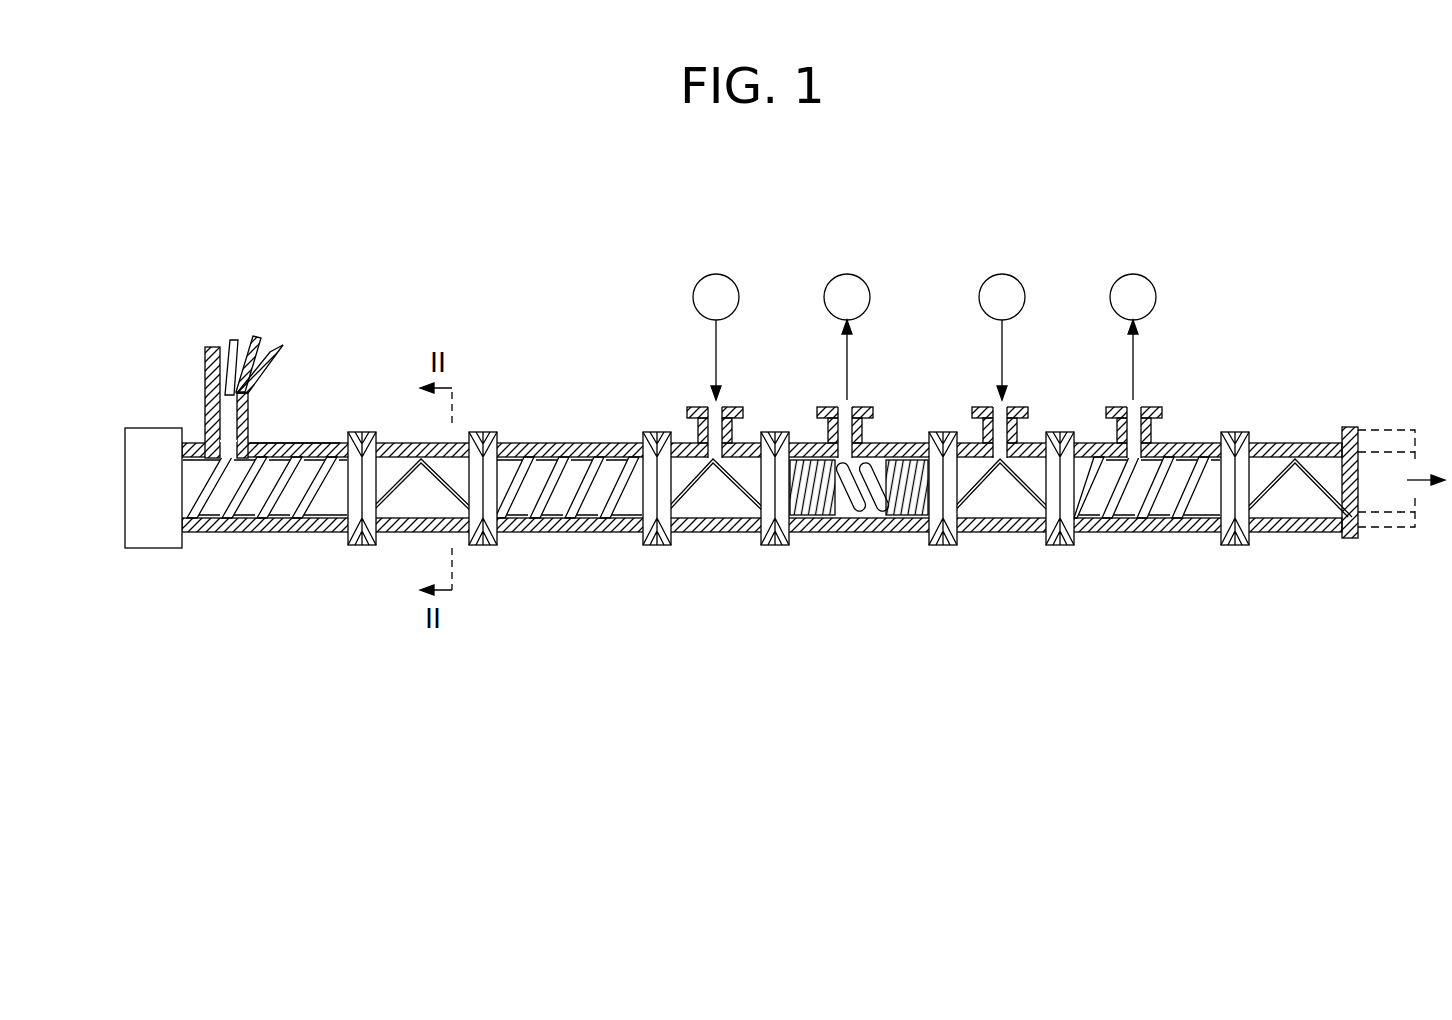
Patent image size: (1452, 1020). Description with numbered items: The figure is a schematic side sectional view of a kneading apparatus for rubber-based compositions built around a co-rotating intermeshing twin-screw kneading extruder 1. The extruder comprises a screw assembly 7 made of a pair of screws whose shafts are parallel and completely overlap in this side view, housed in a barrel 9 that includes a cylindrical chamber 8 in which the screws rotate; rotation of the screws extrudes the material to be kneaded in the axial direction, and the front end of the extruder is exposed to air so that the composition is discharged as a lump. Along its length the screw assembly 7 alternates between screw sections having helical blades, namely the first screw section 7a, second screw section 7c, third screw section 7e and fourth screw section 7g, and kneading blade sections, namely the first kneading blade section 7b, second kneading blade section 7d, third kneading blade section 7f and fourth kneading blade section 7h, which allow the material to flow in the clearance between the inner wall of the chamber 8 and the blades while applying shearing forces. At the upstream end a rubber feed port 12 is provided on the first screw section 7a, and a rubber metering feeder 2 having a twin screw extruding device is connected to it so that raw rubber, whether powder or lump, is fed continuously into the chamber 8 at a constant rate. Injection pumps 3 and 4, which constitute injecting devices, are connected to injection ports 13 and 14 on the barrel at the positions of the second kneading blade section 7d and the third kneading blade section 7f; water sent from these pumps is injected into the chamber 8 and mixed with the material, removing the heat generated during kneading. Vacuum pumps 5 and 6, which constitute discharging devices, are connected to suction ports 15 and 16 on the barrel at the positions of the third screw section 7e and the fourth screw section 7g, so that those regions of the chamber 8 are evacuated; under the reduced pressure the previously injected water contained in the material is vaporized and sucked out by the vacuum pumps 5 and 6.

The co-rotating intermeshing twin-screw kneading extruder 1 is at (150, 560).
The rubber metering feeder 2 is at (258, 318).
The injection pump 3 is at (732, 268).
The injection pump 4 is at (1021, 264).
The vacuum pump 5 is at (870, 266).
The vacuum pump 6 is at (1159, 264).
The screw assembly 7 is at (767, 545).
The first screw section 7a is at (280, 510).
The first kneading blade section 7b is at (400, 508).
The second screw section 7c is at (583, 505).
The second kneading blade section 7d is at (713, 505).
The third screw section 7e is at (860, 507).
The third kneading blade section 7f is at (1000, 503).
The fourth screw section 7g is at (1120, 505).
The fourth kneading blade section 7h is at (1300, 500).
The cylindrical chamber 8 is at (297, 531).
The barrel 9 is at (288, 441).
The rubber feed port 12 is at (221, 441).
The injection port 13 is at (748, 418).
The injection port 14 is at (1036, 418).
The suction port 15 is at (876, 418).
The suction port 16 is at (1172, 418).